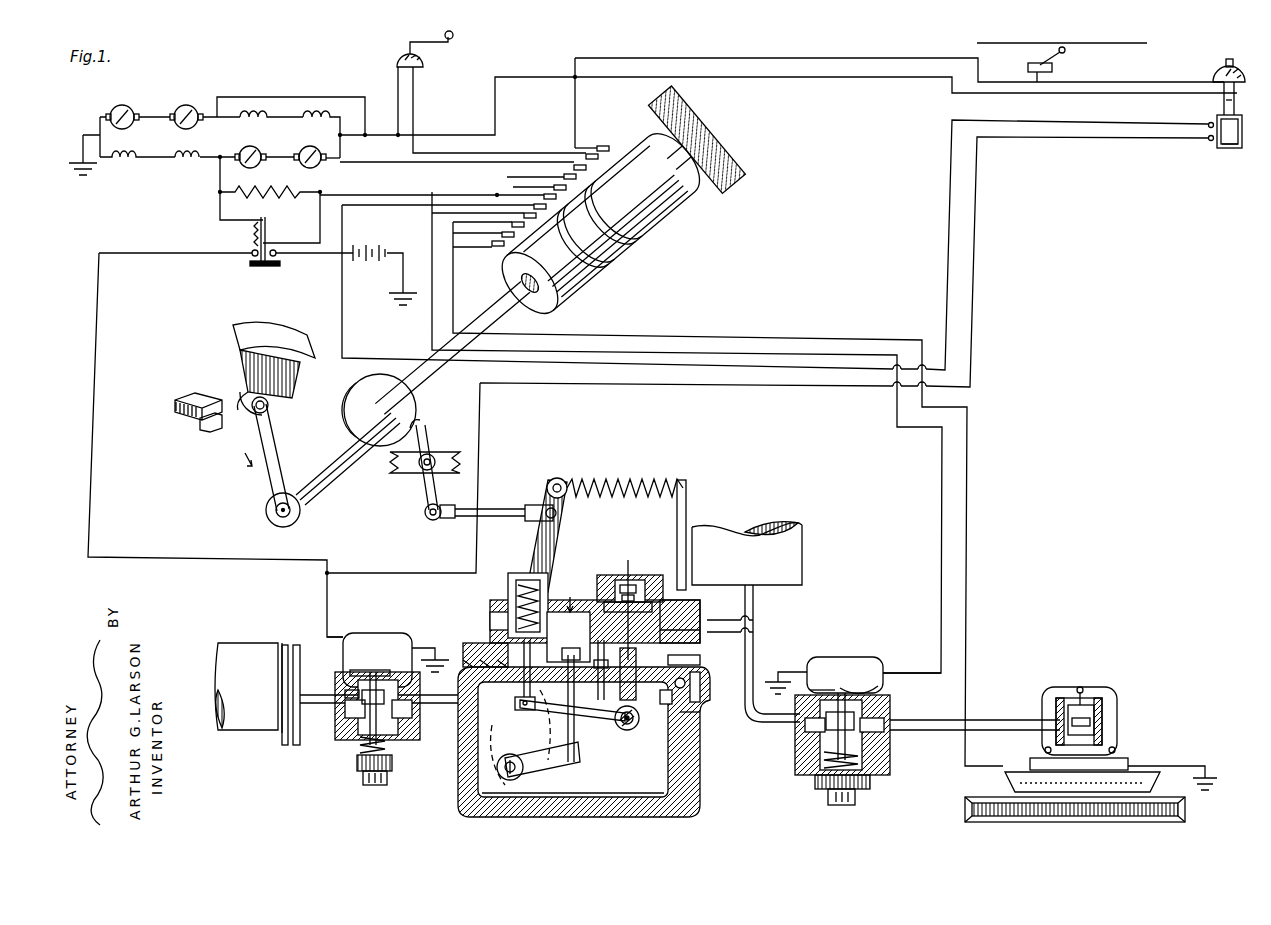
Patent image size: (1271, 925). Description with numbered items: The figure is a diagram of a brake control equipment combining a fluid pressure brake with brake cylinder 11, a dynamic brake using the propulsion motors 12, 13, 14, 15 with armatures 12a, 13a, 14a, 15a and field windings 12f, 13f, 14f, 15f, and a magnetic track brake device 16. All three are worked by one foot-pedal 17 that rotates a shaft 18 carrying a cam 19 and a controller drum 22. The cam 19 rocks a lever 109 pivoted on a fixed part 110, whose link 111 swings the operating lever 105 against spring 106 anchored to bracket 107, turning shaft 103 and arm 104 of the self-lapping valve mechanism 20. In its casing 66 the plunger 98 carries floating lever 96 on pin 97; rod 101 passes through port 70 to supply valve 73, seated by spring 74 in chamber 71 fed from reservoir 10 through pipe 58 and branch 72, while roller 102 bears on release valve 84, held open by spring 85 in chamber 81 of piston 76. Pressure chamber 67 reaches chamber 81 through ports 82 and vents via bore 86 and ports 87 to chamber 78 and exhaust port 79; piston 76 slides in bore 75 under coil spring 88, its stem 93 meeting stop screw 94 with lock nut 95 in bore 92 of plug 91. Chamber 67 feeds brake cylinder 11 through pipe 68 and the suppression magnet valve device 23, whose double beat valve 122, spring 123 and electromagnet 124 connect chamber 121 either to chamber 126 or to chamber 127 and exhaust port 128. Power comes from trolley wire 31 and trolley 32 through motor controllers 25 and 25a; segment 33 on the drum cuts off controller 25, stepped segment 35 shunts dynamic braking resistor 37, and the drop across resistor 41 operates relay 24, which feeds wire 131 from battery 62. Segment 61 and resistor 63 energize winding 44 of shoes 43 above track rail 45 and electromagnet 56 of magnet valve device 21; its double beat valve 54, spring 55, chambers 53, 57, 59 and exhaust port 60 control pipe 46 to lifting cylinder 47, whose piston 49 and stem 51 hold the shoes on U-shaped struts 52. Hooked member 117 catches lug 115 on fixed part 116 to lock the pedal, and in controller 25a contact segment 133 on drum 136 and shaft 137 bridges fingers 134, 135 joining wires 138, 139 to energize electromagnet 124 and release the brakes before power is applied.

The reservoir 10 is at (812, 525).
The brake cylinder 11 is at (258, 636).
The propulsion motor 12 is at (112, 107).
The armature 12a is at (150, 100).
The field winding 12f is at (315, 110).
The propulsion motor 13 is at (186, 104).
The armature 13a is at (192, 110).
The field winding 13f is at (252, 110).
The propulsion motor 14 is at (248, 146).
The armature 14a is at (247, 166).
The field winding 14f is at (181, 163).
The propulsion motor 15 is at (310, 146).
The armature 15a is at (311, 168).
The field winding 15f is at (118, 163).
The track brake device 16 is at (1135, 762).
The foot-pedal 17 is at (263, 489).
The shaft 18 is at (352, 443).
The cam 19 is at (362, 398).
The self-lapping valve mechanism 20 is at (568, 619).
The magnet valve device 21 is at (845, 646).
The controller drum 22 is at (680, 214).
The suppression magnet valve device 23 is at (366, 624).
The relay 24 is at (250, 242).
The motor controller 25 is at (390, 64).
The motor controller 25a is at (1206, 74).
The trolley wire 31 is at (1080, 44).
The trolley 32 is at (1055, 51).
The contact segment 33 is at (605, 146).
The stepped contact segment 35 is at (632, 242).
The dynamic braking resistor 37 is at (497, 195).
The resistor 41 is at (272, 200).
The rail contacting shoes 43 is at (1008, 778).
The electro-magnet winding 44 is at (1030, 760).
The track rail 45 is at (966, 806).
The pipe 46 is at (1008, 722).
The lifting cylinder 47 is at (1102, 726).
The piston 49 is at (1102, 710).
The stem 51 is at (1050, 688).
The U-shaped struts 52 is at (1105, 690).
The chamber 53 is at (882, 742).
The double beat valve 54 is at (858, 720).
The spring 55 is at (800, 765).
The electromagnet 56 is at (860, 665).
The chamber 57 is at (812, 778).
The pipe and passage 58 is at (757, 607).
The chamber 59 is at (812, 700).
The exhaust port 60 is at (880, 695).
The stepped contact segment 61 is at (578, 292).
The battery 62 is at (383, 250).
The resistor 63 is at (455, 250).
The sectional casing 66 is at (690, 786).
The pressure chamber 67 is at (568, 800).
The pipe 68 is at (440, 705).
The port 70 is at (480, 650).
The chamber 71 is at (500, 620).
The branch pipe and passage 72 is at (712, 636).
The supply valve 73 is at (495, 620).
The spring 74 is at (510, 594).
The bore 75 is at (690, 714).
The piston 76 is at (700, 690).
The chamber 78 is at (700, 660).
The exhaust port 79 is at (672, 697).
The chamber 81 is at (640, 690).
The ports 82 is at (601, 690).
The release valve 84 is at (636, 720).
The spring 85 is at (622, 726).
The axial bore 86 is at (686, 683).
The ports 87 is at (700, 627).
The coil spring 88 is at (680, 615).
The threaded plug 91 is at (640, 580).
The axial bore 92 is at (620, 585).
The stem 93 is at (630, 590).
The stop screw 94 is at (630, 575).
The lock nut 95 is at (604, 604).
The floating lever 96 is at (590, 720).
The pin 97 is at (535, 712).
The plunger 98 is at (575, 760).
The rod 101 is at (506, 700).
The roller 102 is at (632, 730).
The rotary operating shaft 103 is at (497, 775).
The arm 104 is at (516, 760).
The operating lever 105 is at (535, 543).
The coil spring 106 is at (622, 480).
The bracket 107 is at (688, 506).
The lever 109 is at (428, 487).
The fixed part 110 is at (392, 479).
The link 111 is at (452, 522).
The projecting lug 115 is at (210, 432).
The fixed part 116 is at (176, 418).
The hooked member 117 is at (246, 384).
The chamber 121 is at (345, 700).
The double beat valve 122 is at (342, 690).
The coil spring 123 is at (350, 748).
The electromagnet 124 is at (388, 633).
The chamber 126 is at (400, 746).
The chamber 127 is at (358, 672).
The exhaust port 128 is at (398, 662).
The wire 131 is at (99, 310).
The contact segment 133 is at (1230, 145).
The contact finger 134 is at (1208, 125).
The contact finger 135 is at (1209, 141).
The rotary drum 136 is at (1220, 146).
The operating shaft 137 is at (1224, 108).
The wire 138 is at (947, 173).
The wire 139 is at (974, 170).